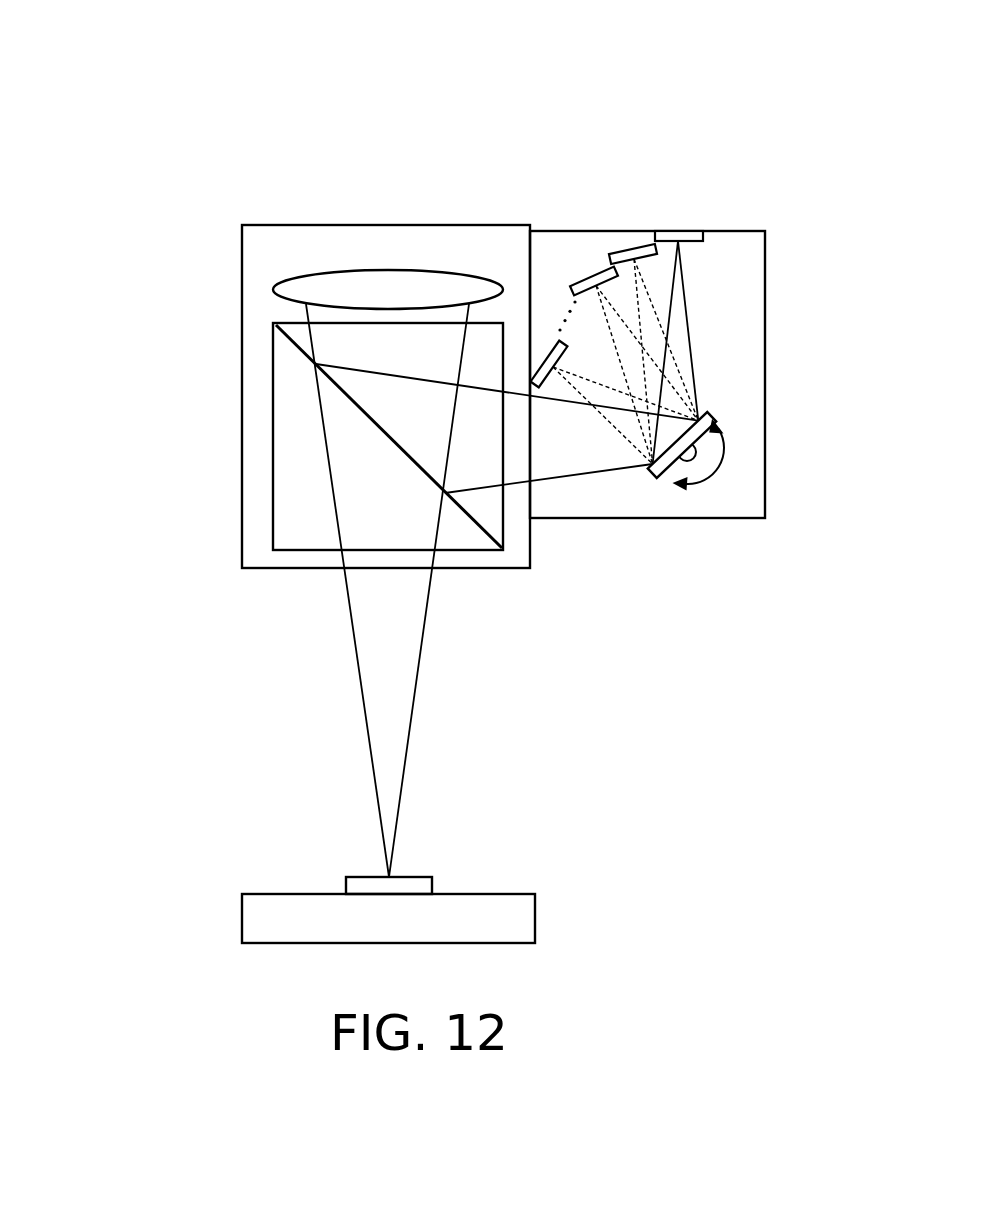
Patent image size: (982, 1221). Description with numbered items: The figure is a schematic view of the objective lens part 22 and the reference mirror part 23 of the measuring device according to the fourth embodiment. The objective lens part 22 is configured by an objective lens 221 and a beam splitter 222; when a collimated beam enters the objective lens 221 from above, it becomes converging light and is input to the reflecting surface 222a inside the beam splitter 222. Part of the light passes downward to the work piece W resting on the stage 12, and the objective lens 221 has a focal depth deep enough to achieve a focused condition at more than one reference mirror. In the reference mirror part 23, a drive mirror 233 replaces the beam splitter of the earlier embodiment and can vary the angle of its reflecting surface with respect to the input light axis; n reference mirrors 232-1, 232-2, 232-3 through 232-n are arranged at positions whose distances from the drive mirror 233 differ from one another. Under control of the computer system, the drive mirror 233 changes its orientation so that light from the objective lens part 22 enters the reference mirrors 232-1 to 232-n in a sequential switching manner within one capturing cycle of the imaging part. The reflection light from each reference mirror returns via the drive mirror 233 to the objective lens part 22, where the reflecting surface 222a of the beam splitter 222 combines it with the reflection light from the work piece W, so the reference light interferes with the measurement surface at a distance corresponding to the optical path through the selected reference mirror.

The stage 12 is at (535, 912).
The work piece W is at (431, 877).
The objective lens part 22 is at (241, 344).
The objective lens 221 is at (276, 296).
The beam splitter 222 is at (272, 518).
The reflecting surface 222a is at (297, 350).
The reference mirror part 23 is at (592, 518).
The reference mirror 232-1 is at (690, 231).
The reference mirror 232-2 is at (633, 249).
The reference mirror 232-3 is at (588, 280).
The reference mirror 232-n is at (545, 357).
The drive mirror 233 is at (665, 480).